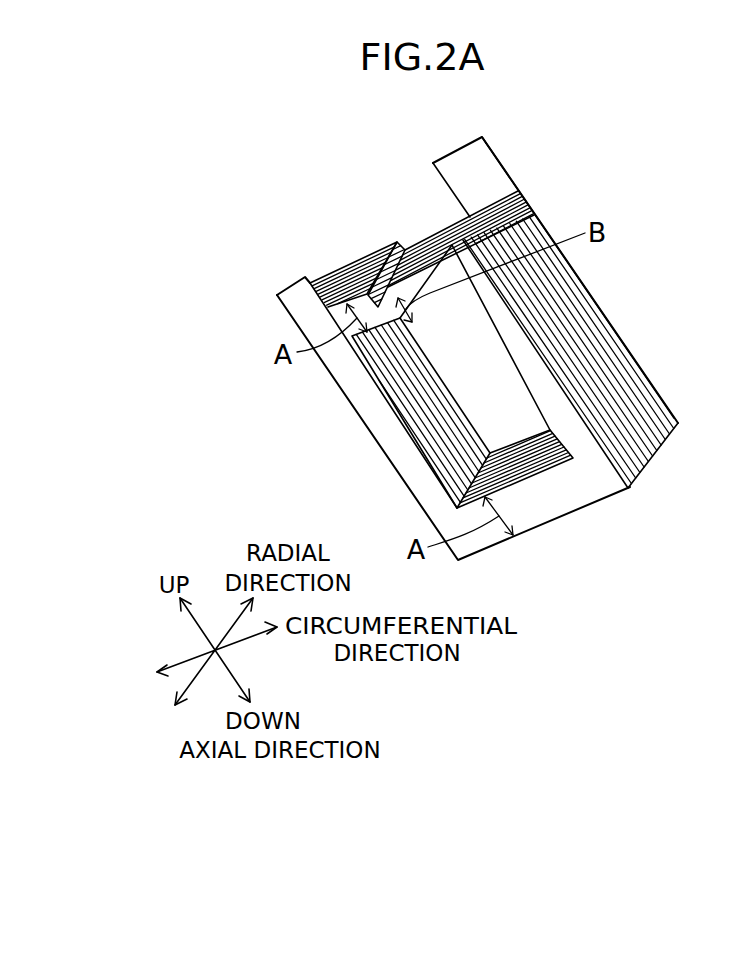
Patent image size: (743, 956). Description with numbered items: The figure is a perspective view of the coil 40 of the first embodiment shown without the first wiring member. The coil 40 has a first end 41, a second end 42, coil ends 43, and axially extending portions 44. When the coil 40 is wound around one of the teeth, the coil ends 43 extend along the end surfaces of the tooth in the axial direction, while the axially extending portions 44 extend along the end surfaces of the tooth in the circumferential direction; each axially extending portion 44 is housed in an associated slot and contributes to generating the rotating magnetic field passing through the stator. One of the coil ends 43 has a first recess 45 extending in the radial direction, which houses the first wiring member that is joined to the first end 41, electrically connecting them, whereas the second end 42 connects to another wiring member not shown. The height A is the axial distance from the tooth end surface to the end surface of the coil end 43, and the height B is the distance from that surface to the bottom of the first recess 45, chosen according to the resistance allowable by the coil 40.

The coil 40 is at (312, 156).
The first end 41 is at (292, 307).
The second end 42 is at (478, 170).
The coil end 43 is at (346, 251).
The axially extending portion 44 is at (610, 300).
The first recess 45 is at (411, 242).